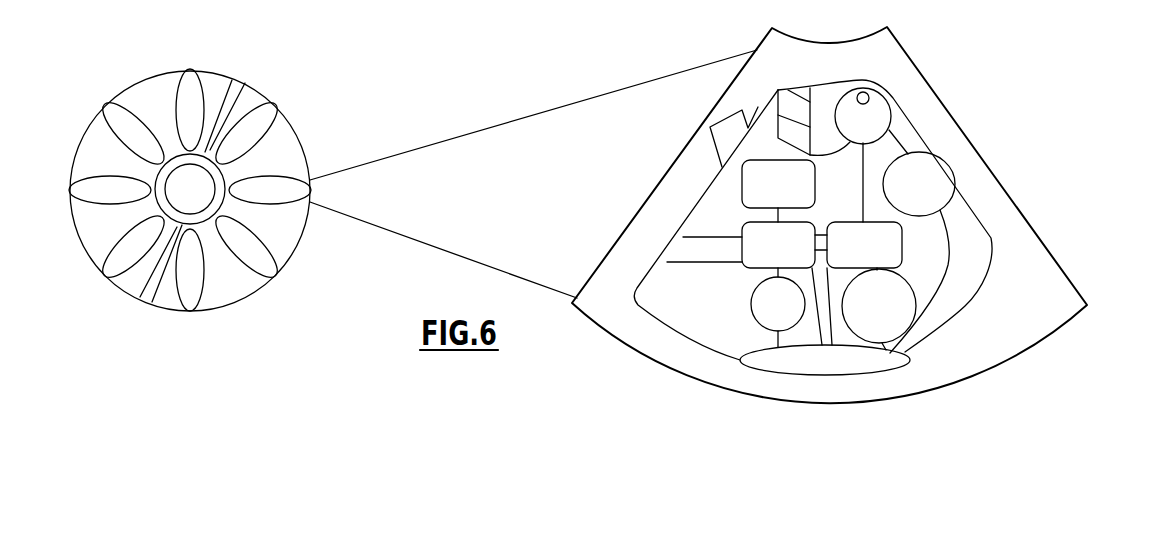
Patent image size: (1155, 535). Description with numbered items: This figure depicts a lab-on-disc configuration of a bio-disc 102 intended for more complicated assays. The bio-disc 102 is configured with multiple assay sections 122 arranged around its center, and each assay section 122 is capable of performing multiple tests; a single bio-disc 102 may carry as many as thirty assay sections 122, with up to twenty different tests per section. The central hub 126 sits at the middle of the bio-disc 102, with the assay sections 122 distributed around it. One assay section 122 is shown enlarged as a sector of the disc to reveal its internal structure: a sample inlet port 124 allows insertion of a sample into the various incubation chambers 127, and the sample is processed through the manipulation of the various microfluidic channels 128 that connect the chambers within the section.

The bio-disc 102 is at (113, 103).
The assay sections 122 is at (197, 87).
The central hub 126 is at (218, 175).
The sample inlet port 124 is at (868, 95).
The incubation chambers 127 is at (937, 172).
The microfluidic channels 128 is at (950, 243).